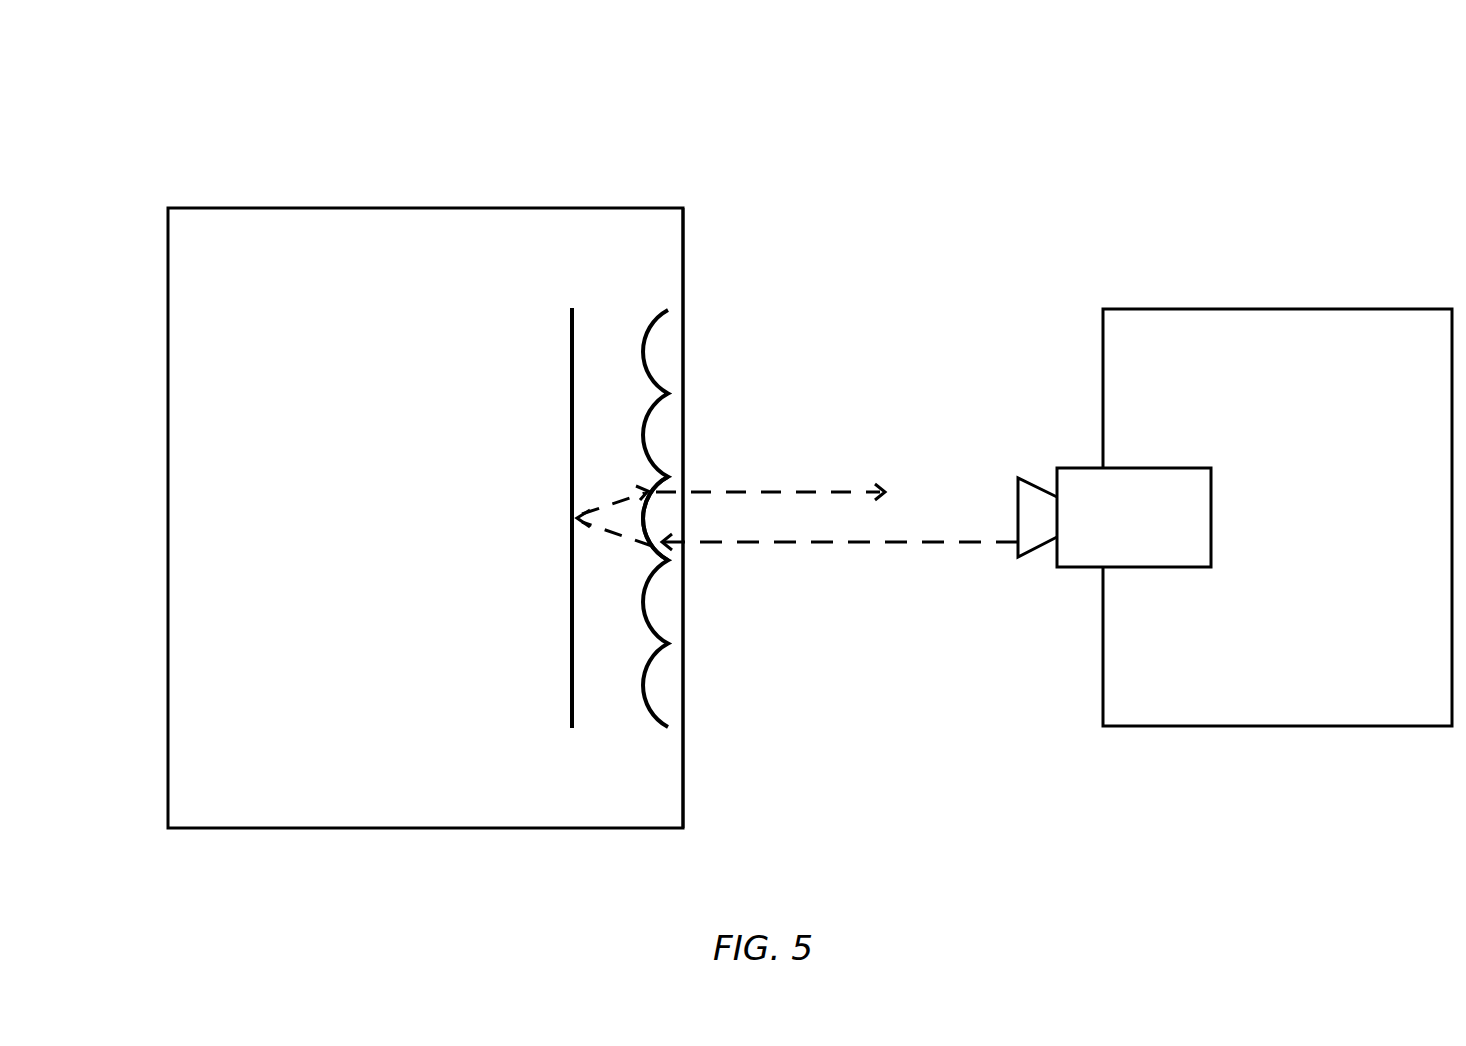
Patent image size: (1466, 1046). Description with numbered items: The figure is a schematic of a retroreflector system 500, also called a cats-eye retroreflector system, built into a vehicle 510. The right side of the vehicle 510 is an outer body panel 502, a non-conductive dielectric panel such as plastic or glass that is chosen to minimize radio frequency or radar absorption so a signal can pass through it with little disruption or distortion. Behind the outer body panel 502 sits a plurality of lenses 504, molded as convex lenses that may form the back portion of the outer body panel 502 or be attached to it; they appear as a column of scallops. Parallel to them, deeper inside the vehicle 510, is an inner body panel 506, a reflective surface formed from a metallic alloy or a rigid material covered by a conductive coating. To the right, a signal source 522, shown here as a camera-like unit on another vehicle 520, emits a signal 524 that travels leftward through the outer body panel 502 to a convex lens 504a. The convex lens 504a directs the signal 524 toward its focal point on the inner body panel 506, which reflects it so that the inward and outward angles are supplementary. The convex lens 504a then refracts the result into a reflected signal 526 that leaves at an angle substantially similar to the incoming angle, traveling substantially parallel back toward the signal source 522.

The retroreflector system 500 is at (212, 152).
The outer body panel 502 is at (689, 320).
The plurality of lenses 504 is at (665, 307).
The convex lens 504a is at (670, 475).
The inner body panel 506 is at (566, 726).
The vehicle 510 is at (389, 528).
The another vehicle 520 is at (1299, 528).
The signal source 522 is at (1200, 462).
The signal 524 is at (863, 555).
The reflected signal 526 is at (830, 478).